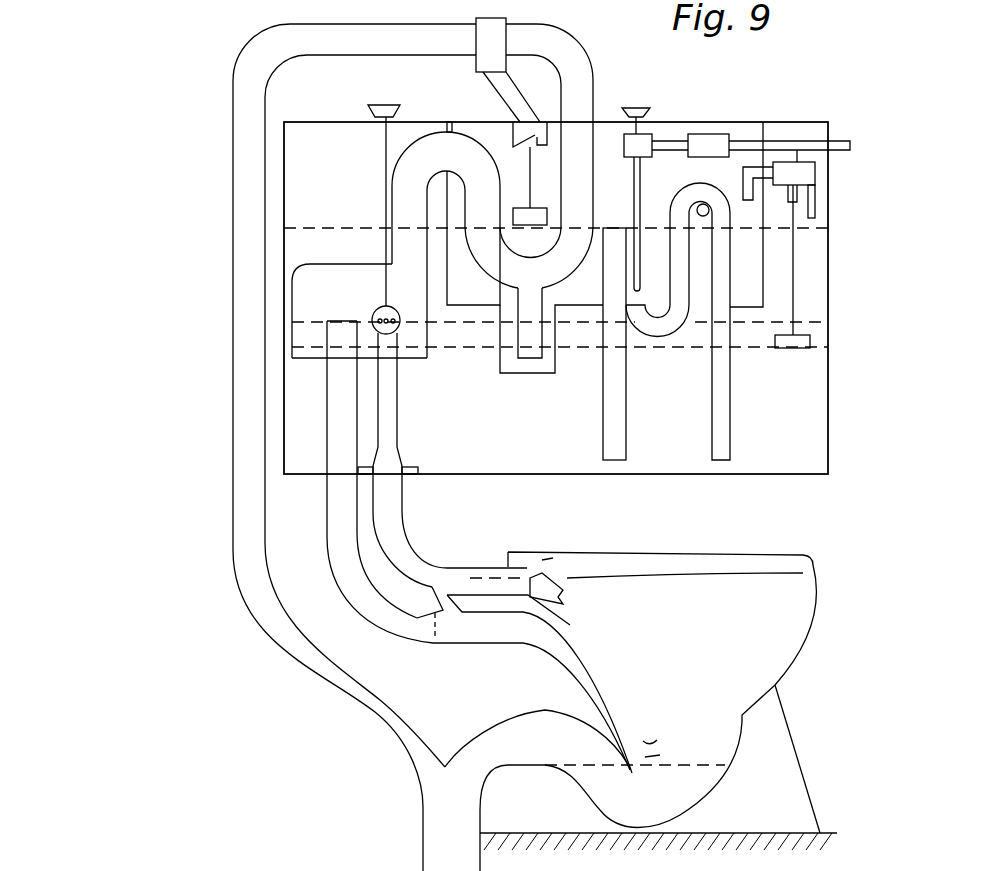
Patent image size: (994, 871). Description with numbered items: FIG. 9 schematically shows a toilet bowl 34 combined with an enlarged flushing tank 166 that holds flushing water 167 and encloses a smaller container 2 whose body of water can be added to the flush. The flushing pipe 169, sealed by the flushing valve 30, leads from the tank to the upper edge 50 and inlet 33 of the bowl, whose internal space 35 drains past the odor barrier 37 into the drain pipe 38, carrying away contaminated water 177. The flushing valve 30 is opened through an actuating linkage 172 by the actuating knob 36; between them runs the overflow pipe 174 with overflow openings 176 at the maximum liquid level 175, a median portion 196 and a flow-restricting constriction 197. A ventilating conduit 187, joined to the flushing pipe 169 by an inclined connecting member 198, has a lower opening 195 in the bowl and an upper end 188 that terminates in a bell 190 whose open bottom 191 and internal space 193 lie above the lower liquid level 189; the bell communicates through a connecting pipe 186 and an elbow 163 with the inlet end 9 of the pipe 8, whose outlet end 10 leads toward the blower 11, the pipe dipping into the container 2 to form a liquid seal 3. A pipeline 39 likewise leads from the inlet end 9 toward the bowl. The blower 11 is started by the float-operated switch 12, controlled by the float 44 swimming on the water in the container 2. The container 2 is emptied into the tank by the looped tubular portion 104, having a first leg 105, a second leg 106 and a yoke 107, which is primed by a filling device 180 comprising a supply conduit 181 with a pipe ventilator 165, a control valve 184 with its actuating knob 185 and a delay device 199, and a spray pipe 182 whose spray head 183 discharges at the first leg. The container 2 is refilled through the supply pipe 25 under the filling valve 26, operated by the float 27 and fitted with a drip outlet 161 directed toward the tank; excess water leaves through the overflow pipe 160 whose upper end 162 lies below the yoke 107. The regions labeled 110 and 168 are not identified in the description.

The container 2 is at (794, 262).
The liquid seal 3 is at (528, 350).
The pipe 8 is at (285, 42).
The inlet end 9 is at (475, 235).
The outlet end 10 is at (573, 203).
The blower 11 is at (497, 32).
The float-operated switch 12 is at (520, 140).
The supply pipe 25 is at (753, 200).
The filling valve 26 is at (816, 172).
The float 27 is at (810, 341).
The flushing valve 30 is at (395, 468).
The inlet 33 is at (552, 578).
The toilet bowl 34 is at (808, 635).
The internal space 35 is at (705, 650).
The actuating knob 36 is at (375, 106).
The odor barrier 37 is at (398, 480).
The drain pipe 38 is at (430, 807).
The pipeline 39 is at (338, 558).
The float 44 is at (517, 212).
The upper edge 50 is at (605, 560).
The looped tubular portion 104 is at (716, 183).
The first leg 105 is at (690, 283).
The second leg 106 is at (732, 390).
The yoke 107 is at (708, 214).
The jet passage 110 is at (527, 628).
The overflow pipe 160 is at (627, 395).
The drip outlet 161 is at (816, 200).
The upper end 162 is at (643, 264).
The elbow 163 is at (455, 130).
The pipe ventilator 165 is at (706, 143).
The flushing tank 166 is at (830, 384).
The flushing water 167 is at (802, 450).
The chamber 168 is at (769, 261).
The flushing pipe 169 is at (415, 562).
The actuating linkage 172 is at (384, 159).
The overflow pipe 174 is at (400, 393).
The maximum liquid level 175 is at (292, 322).
The overflow openings 176 is at (392, 310).
The contaminated water 177 is at (687, 793).
The filling device 180 is at (640, 178).
The supply conduit 181 is at (660, 141).
The spray pipe 182 is at (415, 360).
The spray head 183 is at (642, 291).
The control valve 184 is at (626, 152).
The actuating knob 185 is at (638, 107).
The connecting pipe 186 is at (402, 200).
The ventilating conduit 187 is at (326, 443).
The upper end 188 is at (345, 320).
The lower liquid level 189 is at (298, 360).
The bell 190 is at (312, 265).
The bottom 191 is at (300, 372).
The internal space 193 is at (335, 298).
The opening 195 is at (650, 746).
The median portion 196 is at (400, 418).
The constriction 197 is at (400, 443).
The connecting member 198 is at (428, 612).
The delay device 199 is at (623, 137).